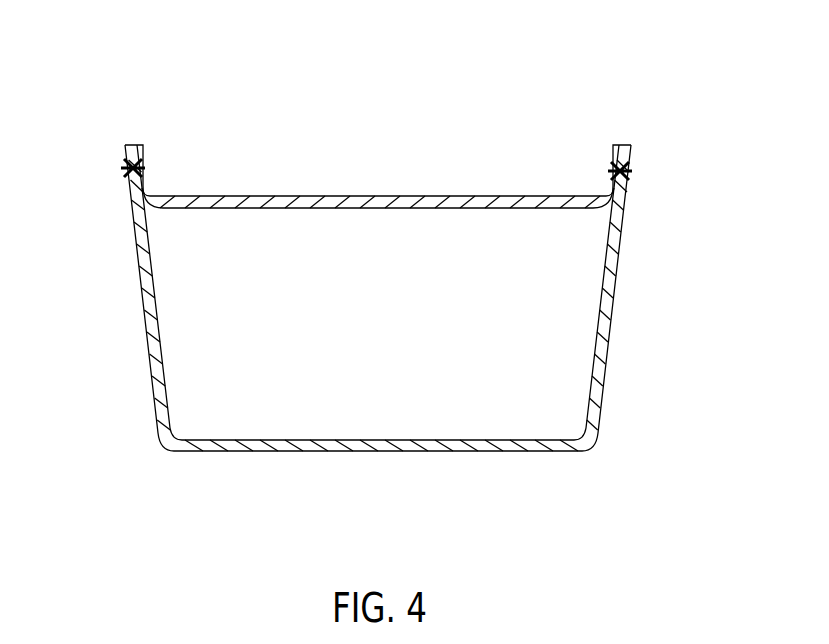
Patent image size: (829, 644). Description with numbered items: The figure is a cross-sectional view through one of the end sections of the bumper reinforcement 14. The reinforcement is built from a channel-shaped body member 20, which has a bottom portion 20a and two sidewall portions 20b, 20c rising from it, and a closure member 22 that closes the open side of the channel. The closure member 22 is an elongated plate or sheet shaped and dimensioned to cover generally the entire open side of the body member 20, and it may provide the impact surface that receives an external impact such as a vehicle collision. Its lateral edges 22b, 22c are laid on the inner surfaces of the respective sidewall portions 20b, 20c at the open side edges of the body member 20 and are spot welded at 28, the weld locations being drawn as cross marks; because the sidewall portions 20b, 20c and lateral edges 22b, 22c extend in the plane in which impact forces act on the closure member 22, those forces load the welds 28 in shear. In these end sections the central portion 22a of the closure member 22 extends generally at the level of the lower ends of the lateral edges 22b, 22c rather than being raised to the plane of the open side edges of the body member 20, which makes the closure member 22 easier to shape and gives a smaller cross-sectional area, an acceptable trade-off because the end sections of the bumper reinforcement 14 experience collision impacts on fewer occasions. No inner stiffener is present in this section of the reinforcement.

The bumper reinforcement 14 is at (378, 274).
The body member 20 is at (377, 333).
The bottom portion 20a is at (343, 453).
The sidewall portion 20b is at (135, 238).
The sidewall portion 20c is at (622, 237).
The closure member 22 is at (380, 142).
The central portion 22a is at (393, 195).
The lateral edge 22b is at (137, 146).
The lateral edge 22c is at (620, 146).
The spot weld 28 is at (122, 166).